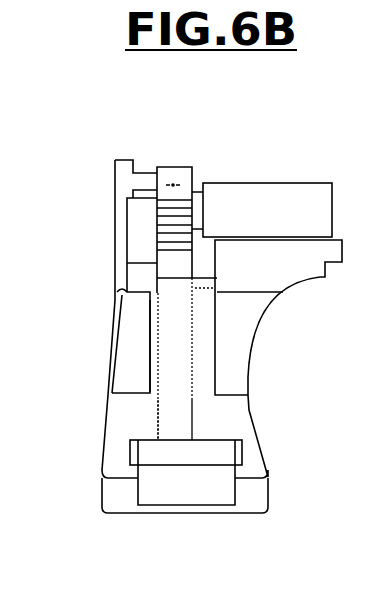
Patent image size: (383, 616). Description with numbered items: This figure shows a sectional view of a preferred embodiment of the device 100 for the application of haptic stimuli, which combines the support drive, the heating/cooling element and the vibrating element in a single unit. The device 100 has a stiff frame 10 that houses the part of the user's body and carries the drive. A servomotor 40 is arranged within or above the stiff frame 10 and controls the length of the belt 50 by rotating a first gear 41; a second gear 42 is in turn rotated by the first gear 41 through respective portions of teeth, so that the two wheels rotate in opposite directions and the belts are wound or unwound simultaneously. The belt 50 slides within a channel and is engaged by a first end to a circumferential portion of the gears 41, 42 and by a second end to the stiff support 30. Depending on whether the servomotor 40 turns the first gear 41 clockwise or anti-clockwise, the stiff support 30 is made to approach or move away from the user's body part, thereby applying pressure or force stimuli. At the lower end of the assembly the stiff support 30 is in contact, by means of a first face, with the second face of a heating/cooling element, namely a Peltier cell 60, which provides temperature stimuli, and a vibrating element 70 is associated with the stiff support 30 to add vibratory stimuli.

The device 100 is at (90, 158).
The stiff frame 10 is at (124, 321).
The first gear 41 is at (187, 159).
The second gear 42 is at (174, 229).
The servomotor 40 is at (321, 172).
The Peltier cell 60 is at (155, 417).
The belt 50 is at (203, 412).
The stiff support 30 is at (130, 457).
The vibrating element 70 is at (152, 497).